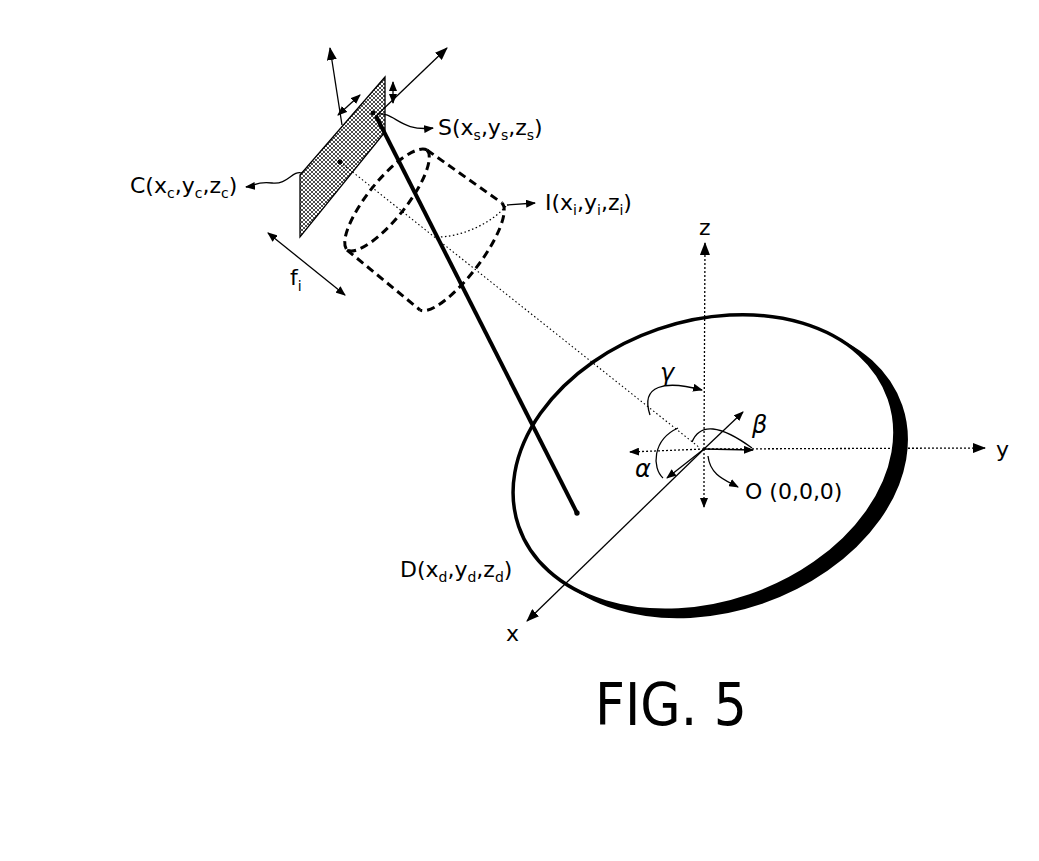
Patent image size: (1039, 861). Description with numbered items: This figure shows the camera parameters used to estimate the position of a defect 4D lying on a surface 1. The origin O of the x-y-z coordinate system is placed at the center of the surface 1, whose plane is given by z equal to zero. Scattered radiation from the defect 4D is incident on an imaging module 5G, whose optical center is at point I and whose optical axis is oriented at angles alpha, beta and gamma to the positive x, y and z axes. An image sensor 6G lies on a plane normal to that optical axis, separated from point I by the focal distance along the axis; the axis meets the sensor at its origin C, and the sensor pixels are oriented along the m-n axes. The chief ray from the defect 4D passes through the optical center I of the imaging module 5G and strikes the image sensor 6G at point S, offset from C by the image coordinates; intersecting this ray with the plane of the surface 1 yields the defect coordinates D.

The surface 1 is at (878, 513).
The defect 4D is at (577, 513).
The imaging module 5G is at (417, 311).
The image sensor 6G is at (330, 142).